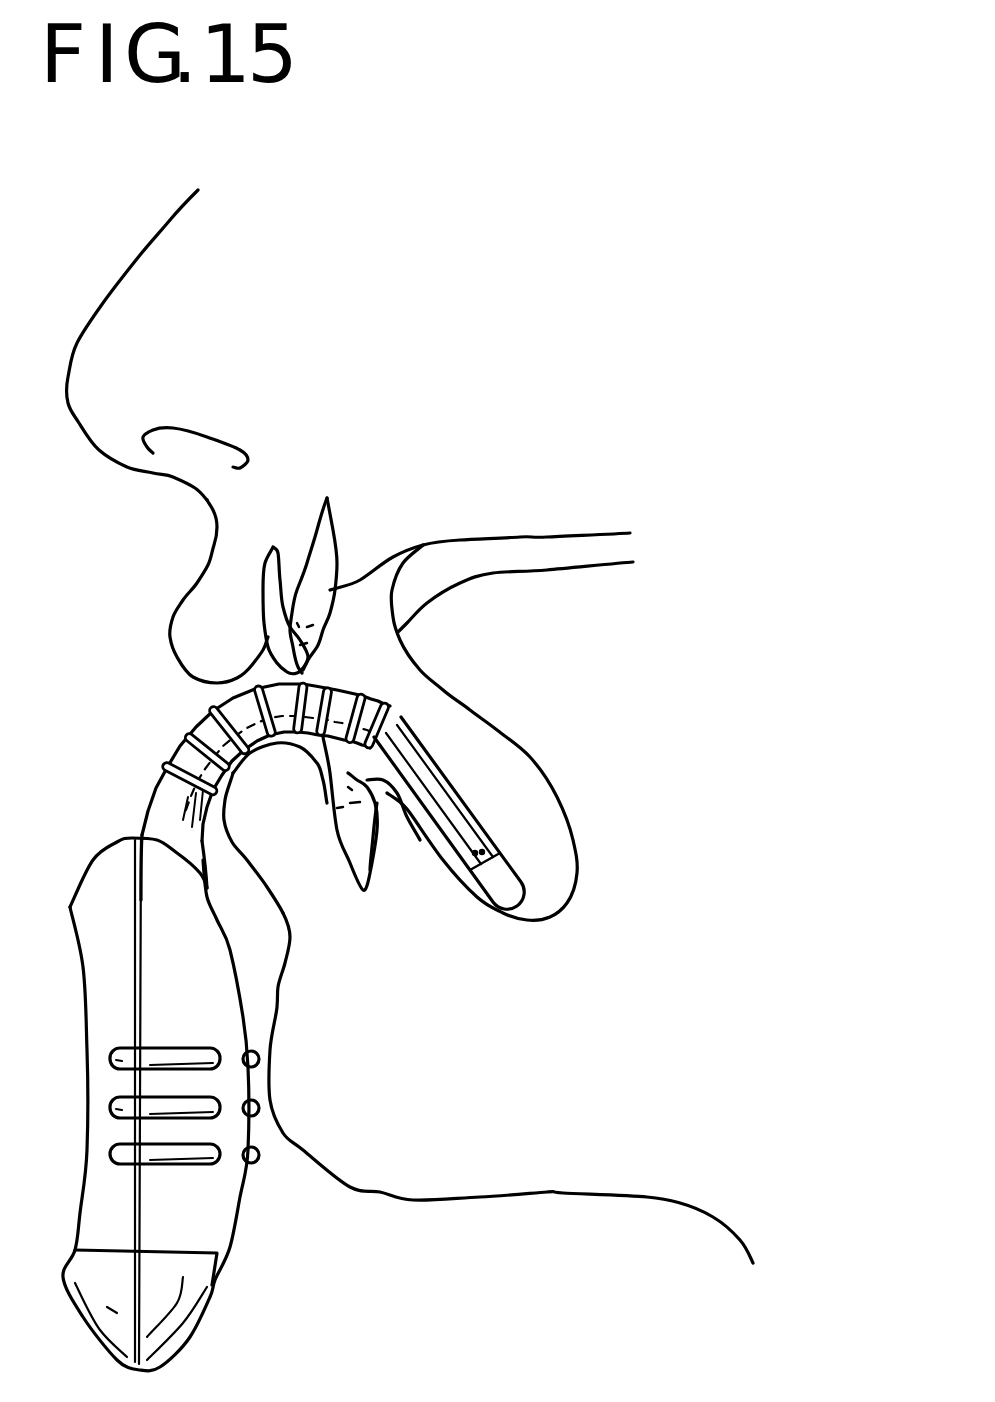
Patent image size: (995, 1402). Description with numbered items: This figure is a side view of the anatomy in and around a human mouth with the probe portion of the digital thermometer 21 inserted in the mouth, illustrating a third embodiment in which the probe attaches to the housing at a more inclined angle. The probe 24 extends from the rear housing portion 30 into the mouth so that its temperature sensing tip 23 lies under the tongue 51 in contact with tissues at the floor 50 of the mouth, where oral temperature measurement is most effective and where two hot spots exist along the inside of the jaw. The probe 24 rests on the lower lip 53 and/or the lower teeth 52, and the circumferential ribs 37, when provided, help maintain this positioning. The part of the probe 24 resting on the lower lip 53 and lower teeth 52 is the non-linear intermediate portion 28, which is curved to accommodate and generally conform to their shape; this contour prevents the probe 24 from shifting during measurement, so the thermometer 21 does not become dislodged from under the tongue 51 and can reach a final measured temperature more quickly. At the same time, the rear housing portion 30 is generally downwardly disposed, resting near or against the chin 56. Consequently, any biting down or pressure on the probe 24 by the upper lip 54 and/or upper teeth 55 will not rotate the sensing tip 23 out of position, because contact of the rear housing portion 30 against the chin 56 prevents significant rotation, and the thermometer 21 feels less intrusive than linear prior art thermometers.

The digital thermometer 21 is at (250, 1273).
The temperature sensing tip 23 is at (508, 887).
The probe 24 is at (433, 770).
The intermediate portion 28 is at (277, 688).
The rear housing portion 30 is at (223, 1003).
The circumferential ribs 37 is at (185, 740).
The floor of the mouth 50 is at (567, 907).
The tongue 51 is at (425, 544).
The lower teeth 52 is at (410, 813).
The lower lip 53 is at (250, 752).
The upper lip 54 is at (213, 677).
The upper teeth 55 is at (317, 643).
The chin 56 is at (267, 1073).